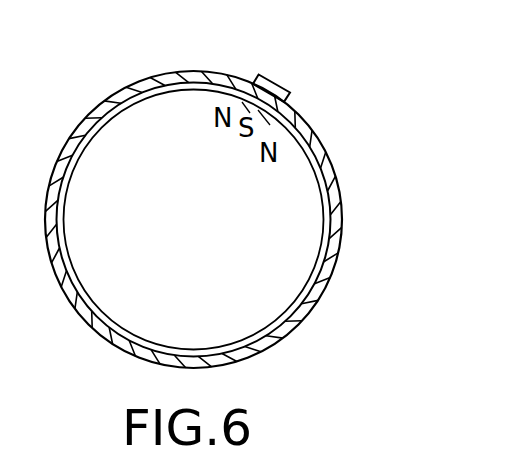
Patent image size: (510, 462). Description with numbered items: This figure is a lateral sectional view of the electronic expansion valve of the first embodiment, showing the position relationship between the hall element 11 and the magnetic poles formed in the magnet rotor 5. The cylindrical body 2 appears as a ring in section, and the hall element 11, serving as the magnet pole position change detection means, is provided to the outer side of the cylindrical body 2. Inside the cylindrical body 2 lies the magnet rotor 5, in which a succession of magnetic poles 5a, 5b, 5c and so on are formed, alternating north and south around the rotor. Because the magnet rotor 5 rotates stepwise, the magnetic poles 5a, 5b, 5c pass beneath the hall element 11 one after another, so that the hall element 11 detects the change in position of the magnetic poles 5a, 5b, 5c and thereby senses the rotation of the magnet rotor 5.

The cylindrical body 2 is at (331, 164).
The magnet rotor 5 is at (302, 247).
The magnetic pole 5a is at (226, 101).
The magnetic pole 5b is at (268, 112).
The magnetic pole 5c is at (287, 124).
The hall element 11 is at (282, 80).